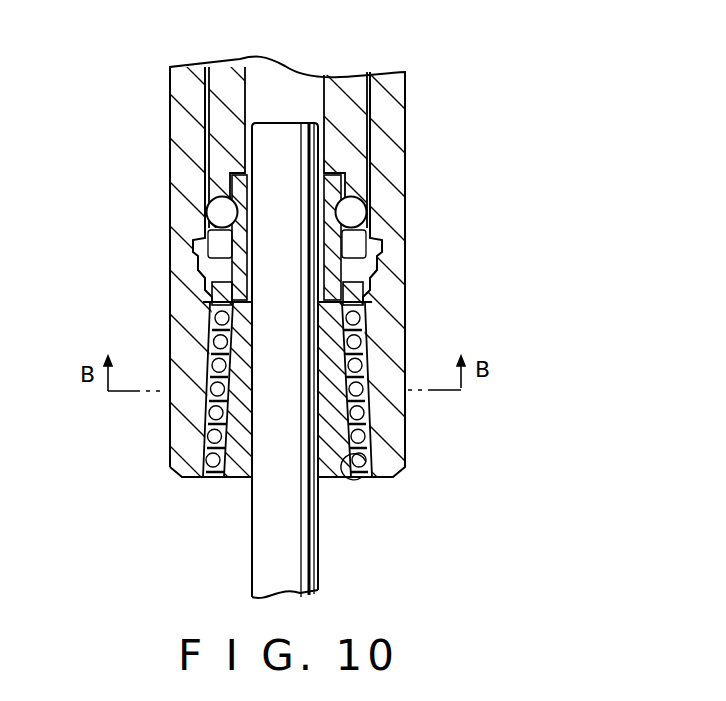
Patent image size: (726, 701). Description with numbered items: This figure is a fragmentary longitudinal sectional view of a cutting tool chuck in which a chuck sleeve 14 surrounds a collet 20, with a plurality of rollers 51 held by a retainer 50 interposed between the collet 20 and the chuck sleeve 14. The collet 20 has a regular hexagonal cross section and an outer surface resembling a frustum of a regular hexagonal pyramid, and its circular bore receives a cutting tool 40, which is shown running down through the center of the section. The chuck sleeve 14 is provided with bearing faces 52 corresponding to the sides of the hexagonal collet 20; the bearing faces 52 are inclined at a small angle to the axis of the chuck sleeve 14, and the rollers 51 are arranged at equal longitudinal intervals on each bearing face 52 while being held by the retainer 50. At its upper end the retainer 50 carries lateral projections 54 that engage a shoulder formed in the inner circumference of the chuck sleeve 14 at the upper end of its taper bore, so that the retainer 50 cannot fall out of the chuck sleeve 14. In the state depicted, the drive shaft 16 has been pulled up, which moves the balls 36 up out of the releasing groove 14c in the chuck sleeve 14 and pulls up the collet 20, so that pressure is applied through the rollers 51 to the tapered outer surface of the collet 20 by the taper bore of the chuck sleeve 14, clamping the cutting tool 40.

The chuck sleeve 14 is at (405, 153).
The releasing groove 14c is at (195, 247).
The drive shaft 16 is at (355, 88).
The collet 20 is at (232, 478).
The balls 36 is at (366, 209).
The cutting tool 40 is at (313, 553).
The retainer 50 is at (212, 293).
The rollers 51 is at (362, 362).
The bearing faces 52 is at (345, 472).
The lateral projections 54 is at (372, 286).